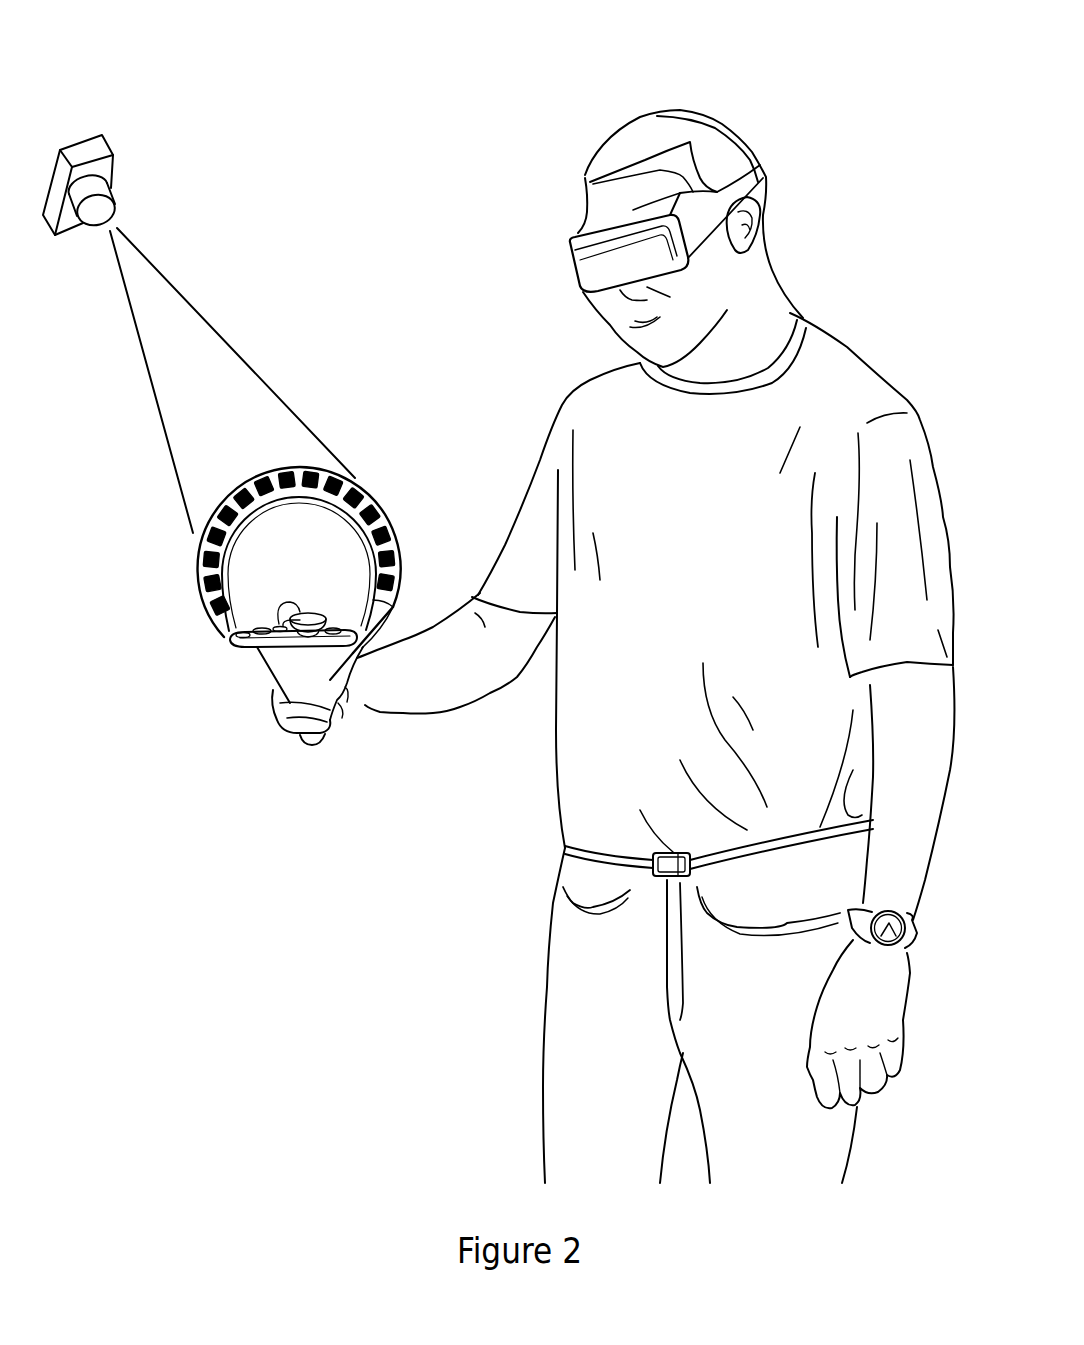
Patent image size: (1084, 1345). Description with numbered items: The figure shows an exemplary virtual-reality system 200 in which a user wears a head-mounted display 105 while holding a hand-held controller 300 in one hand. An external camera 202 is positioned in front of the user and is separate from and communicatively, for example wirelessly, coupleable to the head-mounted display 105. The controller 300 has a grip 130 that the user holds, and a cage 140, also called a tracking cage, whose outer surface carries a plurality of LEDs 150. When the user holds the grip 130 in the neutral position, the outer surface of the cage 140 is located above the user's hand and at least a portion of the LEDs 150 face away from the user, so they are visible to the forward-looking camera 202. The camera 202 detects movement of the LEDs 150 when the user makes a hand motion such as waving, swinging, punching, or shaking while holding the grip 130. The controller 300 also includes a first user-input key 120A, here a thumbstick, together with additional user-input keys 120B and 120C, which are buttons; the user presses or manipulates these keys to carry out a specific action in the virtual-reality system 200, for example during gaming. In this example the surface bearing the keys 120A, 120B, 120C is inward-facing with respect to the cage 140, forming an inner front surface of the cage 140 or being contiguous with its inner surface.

The virtual-reality system 200 is at (278, 52).
The external camera 202 is at (120, 160).
The head-mounted display 105 is at (570, 247).
The hand-held controller 300 is at (173, 530).
The cage 140 is at (272, 467).
The LEDs 150 is at (384, 532).
The first user-input key 120A is at (292, 612).
The user-input key 120B is at (277, 622).
The user-input key 120C is at (353, 651).
The grip 130 is at (312, 745).